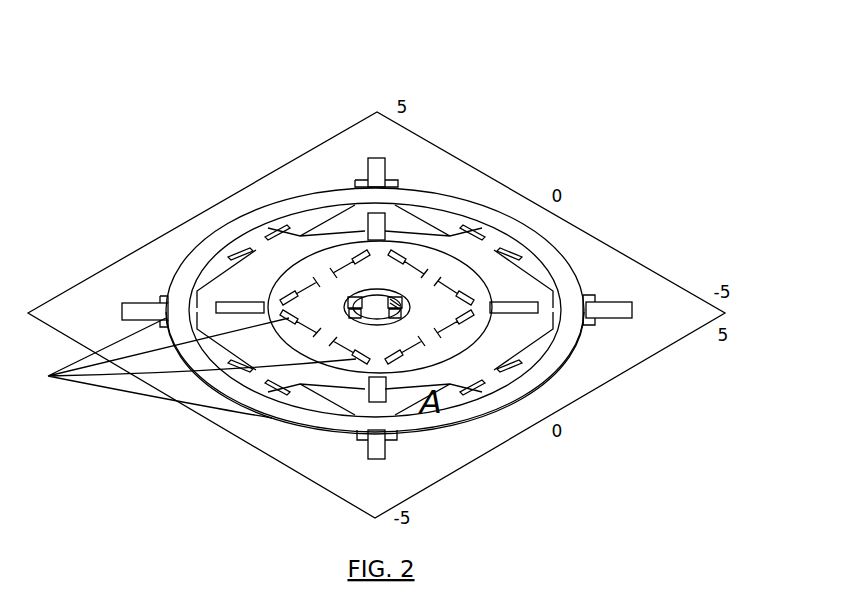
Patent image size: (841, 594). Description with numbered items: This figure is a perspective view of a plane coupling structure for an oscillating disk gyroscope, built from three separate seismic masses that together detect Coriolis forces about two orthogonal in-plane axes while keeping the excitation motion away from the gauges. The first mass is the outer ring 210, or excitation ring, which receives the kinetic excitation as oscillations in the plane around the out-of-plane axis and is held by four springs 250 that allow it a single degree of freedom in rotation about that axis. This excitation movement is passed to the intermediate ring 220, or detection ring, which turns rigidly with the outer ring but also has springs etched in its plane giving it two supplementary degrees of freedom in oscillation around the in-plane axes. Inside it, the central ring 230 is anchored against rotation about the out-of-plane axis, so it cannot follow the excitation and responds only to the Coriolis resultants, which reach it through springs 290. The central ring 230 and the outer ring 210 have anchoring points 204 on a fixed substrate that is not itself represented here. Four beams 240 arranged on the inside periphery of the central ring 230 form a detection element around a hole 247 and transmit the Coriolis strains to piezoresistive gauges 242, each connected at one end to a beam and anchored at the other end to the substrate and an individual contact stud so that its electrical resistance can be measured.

The anchoring points 204 is at (184, 368).
The outer ring 210 is at (570, 293).
The intermediate ring 220 is at (510, 282).
The central ring 230 is at (400, 304).
The beams 240 is at (350, 306).
The gauges 242 is at (391, 318).
The hole 247 is at (388, 298).
The springs 250 is at (383, 170).
The springs 290 is at (377, 232).